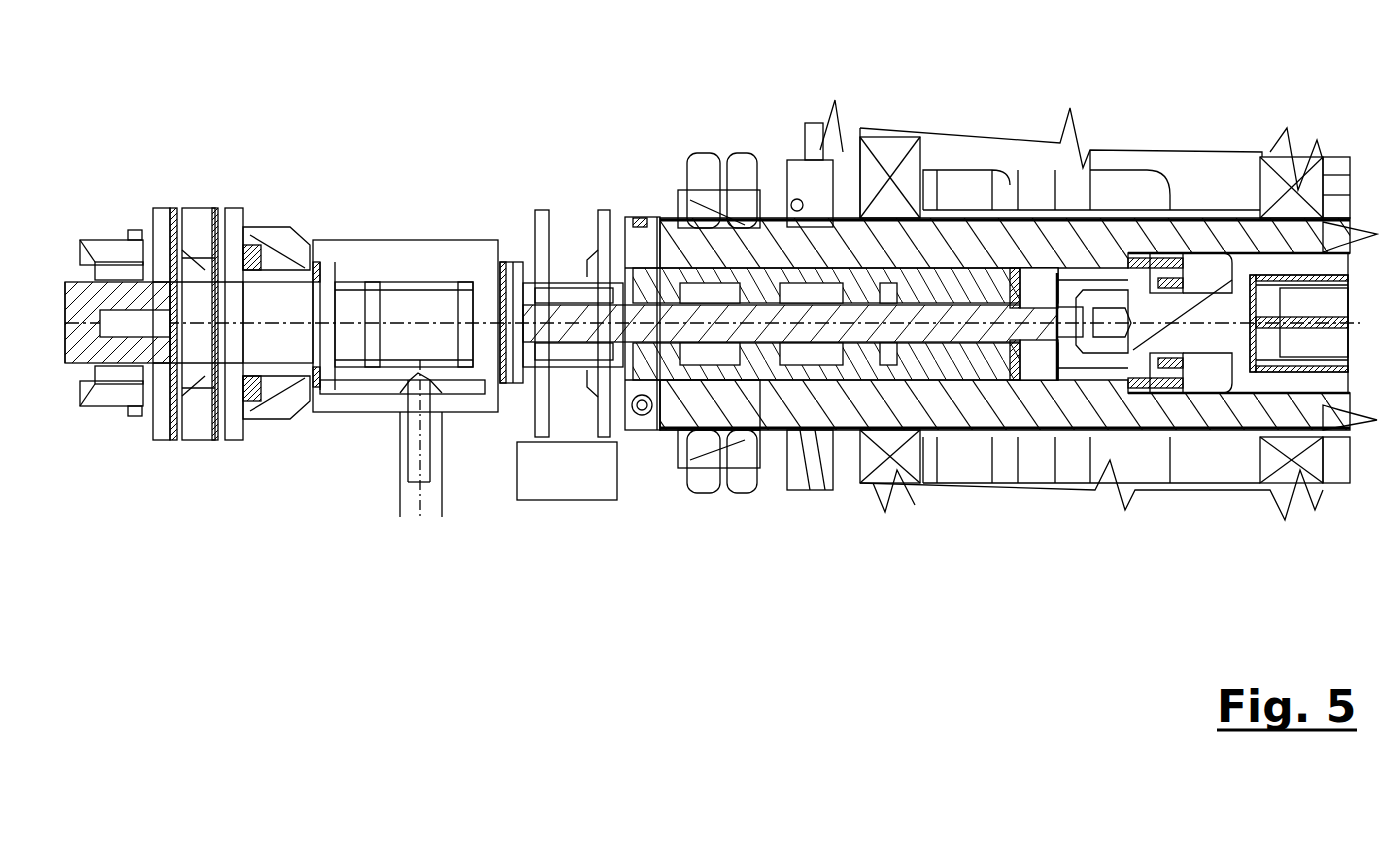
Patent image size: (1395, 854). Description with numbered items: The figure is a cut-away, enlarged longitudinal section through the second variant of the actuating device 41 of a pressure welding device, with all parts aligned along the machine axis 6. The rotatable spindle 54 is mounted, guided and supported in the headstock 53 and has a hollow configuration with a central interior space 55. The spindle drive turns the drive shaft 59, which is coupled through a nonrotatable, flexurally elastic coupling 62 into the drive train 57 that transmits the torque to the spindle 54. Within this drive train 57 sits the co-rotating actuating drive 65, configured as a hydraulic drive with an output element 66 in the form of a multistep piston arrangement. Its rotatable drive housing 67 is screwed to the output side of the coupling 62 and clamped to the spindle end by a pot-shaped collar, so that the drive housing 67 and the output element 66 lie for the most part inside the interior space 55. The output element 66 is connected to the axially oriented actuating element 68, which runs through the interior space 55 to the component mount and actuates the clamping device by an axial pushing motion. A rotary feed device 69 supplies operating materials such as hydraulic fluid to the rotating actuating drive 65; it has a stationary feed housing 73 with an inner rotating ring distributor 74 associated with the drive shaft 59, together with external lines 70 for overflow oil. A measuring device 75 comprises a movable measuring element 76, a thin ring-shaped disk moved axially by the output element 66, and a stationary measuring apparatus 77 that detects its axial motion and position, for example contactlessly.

The actuating device 41 is at (537, 142).
The machine axis 6 is at (260, 317).
The headstock 53 is at (1165, 142).
The spindle 54 is at (692, 258).
The interior space 55 is at (1038, 298).
The drive train 57 is at (222, 465).
The drive shaft 59 is at (94, 263).
The coupling 62 is at (200, 223).
The actuating drive 65 is at (630, 206).
The output element 66 is at (797, 323).
The drive housing 67 is at (668, 425).
The actuating element 68 is at (1245, 330).
The rotary feed device 69 is at (359, 236).
The external lines 70 is at (402, 500).
The feed housing 73 is at (437, 258).
The ring distributor 74 is at (384, 380).
The measuring device 75 is at (517, 223).
The measuring element 76 is at (603, 440).
The measuring apparatus 77 is at (540, 482).